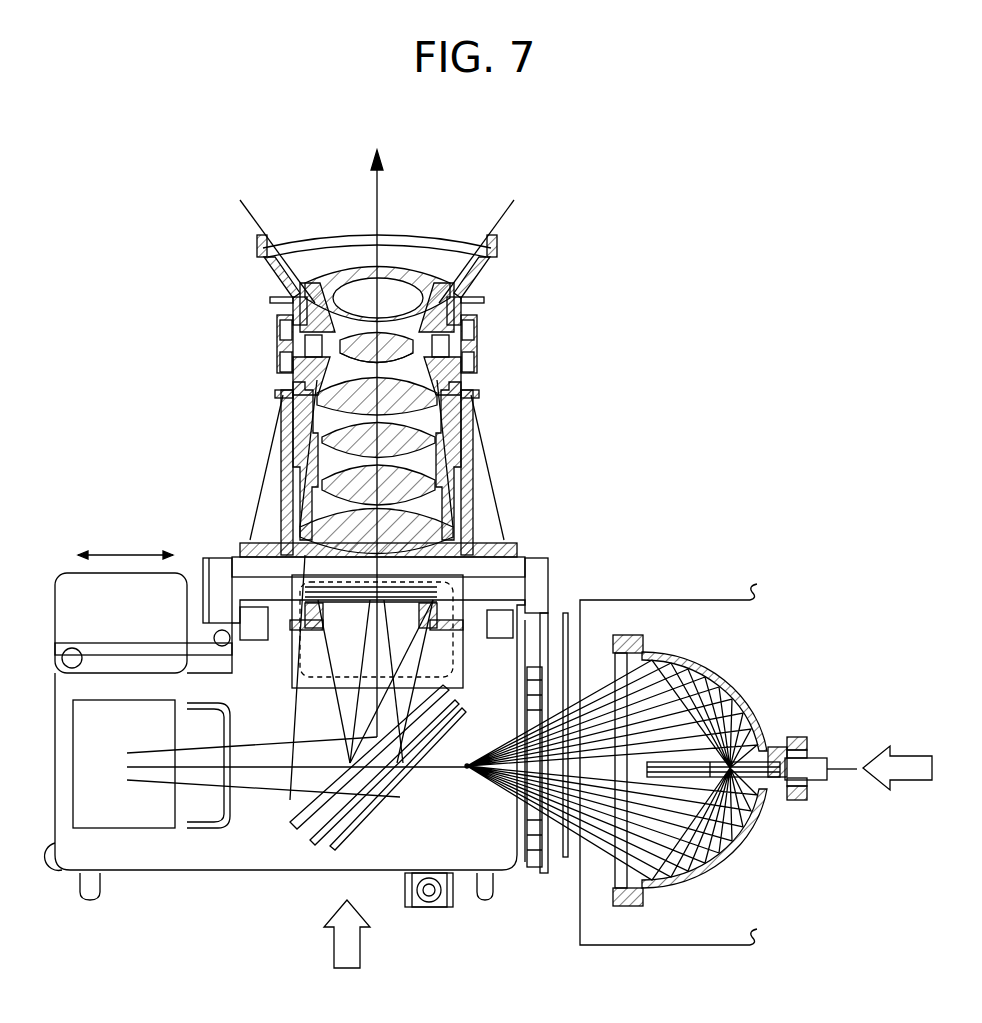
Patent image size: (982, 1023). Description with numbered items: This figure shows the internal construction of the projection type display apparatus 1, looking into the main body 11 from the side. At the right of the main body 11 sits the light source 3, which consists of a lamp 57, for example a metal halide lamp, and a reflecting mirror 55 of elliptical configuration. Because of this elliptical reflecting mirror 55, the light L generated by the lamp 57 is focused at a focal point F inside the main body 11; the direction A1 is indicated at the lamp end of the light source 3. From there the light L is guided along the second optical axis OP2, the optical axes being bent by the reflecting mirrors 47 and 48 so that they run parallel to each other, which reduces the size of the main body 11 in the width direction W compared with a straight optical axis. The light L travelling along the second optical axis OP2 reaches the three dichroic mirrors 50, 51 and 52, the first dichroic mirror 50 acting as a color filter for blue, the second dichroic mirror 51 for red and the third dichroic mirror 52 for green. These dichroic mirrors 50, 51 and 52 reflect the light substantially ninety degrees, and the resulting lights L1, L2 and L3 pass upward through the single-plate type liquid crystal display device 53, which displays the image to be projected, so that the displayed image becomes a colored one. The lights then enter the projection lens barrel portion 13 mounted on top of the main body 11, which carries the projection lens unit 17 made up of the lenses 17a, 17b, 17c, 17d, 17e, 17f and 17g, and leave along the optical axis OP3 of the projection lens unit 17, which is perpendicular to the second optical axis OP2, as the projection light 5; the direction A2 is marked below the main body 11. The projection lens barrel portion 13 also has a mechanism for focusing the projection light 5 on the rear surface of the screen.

The projection type display apparatus 1 is at (632, 352).
The light source 3 is at (662, 764).
The projection light 5 is at (497, 222).
The main body 11 is at (377, 847).
The projection lens barrel portion 13 is at (477, 278).
The projection lens unit 17 is at (413, 368).
The lens 17a is at (410, 262).
The lens 17b is at (463, 313).
The lens 17c is at (463, 355).
The lens 17d is at (413, 397).
The lens 17e is at (412, 452).
The lens 17f is at (427, 487).
The lens 17g is at (447, 517).
The reflecting mirror 47 is at (151, 830).
The reflecting mirror 48 is at (120, 813).
The first dichroic mirror 50 is at (297, 823).
The second dichroic mirror 51 is at (315, 845).
The third dichroic mirror 52 is at (377, 790).
The liquid crystal display device 53 is at (485, 615).
The reflecting mirror 55 is at (687, 677).
The lamp 57 is at (753, 822).
The direction of light from lamp A1 is at (912, 757).
The direction of illumination light A2 is at (360, 952).
The width direction W is at (127, 555).
The second optical axis OP2 is at (192, 770).
The optical axis of the projection lens unit OP3 is at (378, 190).
The light L is at (257, 773).
The light L1 is at (317, 715).
The light L2 is at (383, 708).
The light L3 is at (428, 657).
The focal point F is at (457, 767).